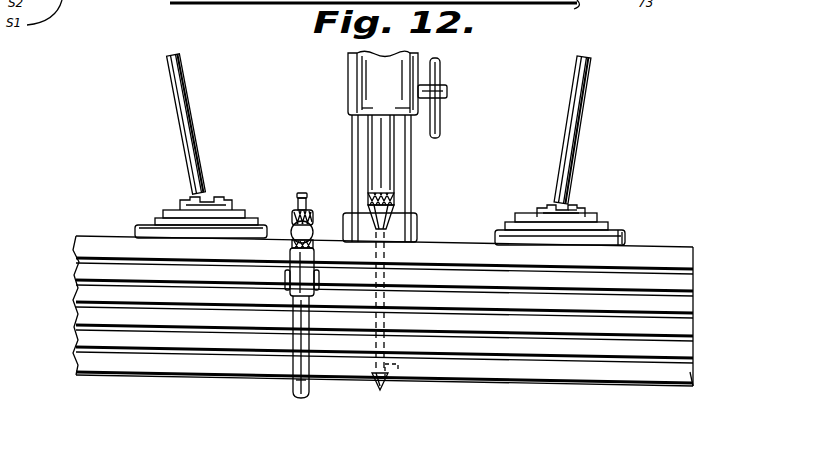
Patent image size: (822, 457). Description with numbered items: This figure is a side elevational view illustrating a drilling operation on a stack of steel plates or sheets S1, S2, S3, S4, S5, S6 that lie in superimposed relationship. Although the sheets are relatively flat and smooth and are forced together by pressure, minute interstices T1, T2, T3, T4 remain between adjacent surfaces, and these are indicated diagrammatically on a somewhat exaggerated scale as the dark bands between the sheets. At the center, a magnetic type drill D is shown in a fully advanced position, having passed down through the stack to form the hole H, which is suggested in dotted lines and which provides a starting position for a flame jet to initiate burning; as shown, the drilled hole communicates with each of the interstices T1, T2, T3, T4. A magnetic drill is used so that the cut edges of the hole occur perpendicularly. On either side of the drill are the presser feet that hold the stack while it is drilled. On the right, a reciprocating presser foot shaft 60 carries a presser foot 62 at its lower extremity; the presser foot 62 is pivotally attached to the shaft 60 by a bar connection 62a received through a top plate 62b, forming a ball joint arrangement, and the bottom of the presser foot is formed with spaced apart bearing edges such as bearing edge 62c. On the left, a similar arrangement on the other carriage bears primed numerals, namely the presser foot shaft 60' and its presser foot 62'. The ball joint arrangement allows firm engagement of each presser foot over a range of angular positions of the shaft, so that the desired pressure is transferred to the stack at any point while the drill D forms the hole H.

The presser foot shaft 60' is at (198, 124).
The presser foot shaft 60 is at (586, 130).
The presser foot 62' is at (201, 193).
The presser foot 62 is at (568, 217).
The bar connection 62a is at (563, 212).
The top plate 62b is at (220, 200).
The bearing edge 62c is at (626, 237).
The drill D is at (383, 229).
The hole H is at (407, 368).
The interstice T1 is at (76, 258).
The interstice T2 is at (76, 280).
The interstice T3 is at (76, 302).
The interstice T4 is at (76, 326).
The steel sheet S1 is at (693, 373).
The steel sheet S2 is at (693, 349).
The steel sheet S3 is at (693, 325).
The steel sheet S4 is at (693, 302).
The steel sheet S5 is at (693, 278).
The steel sheet S6 is at (693, 254).